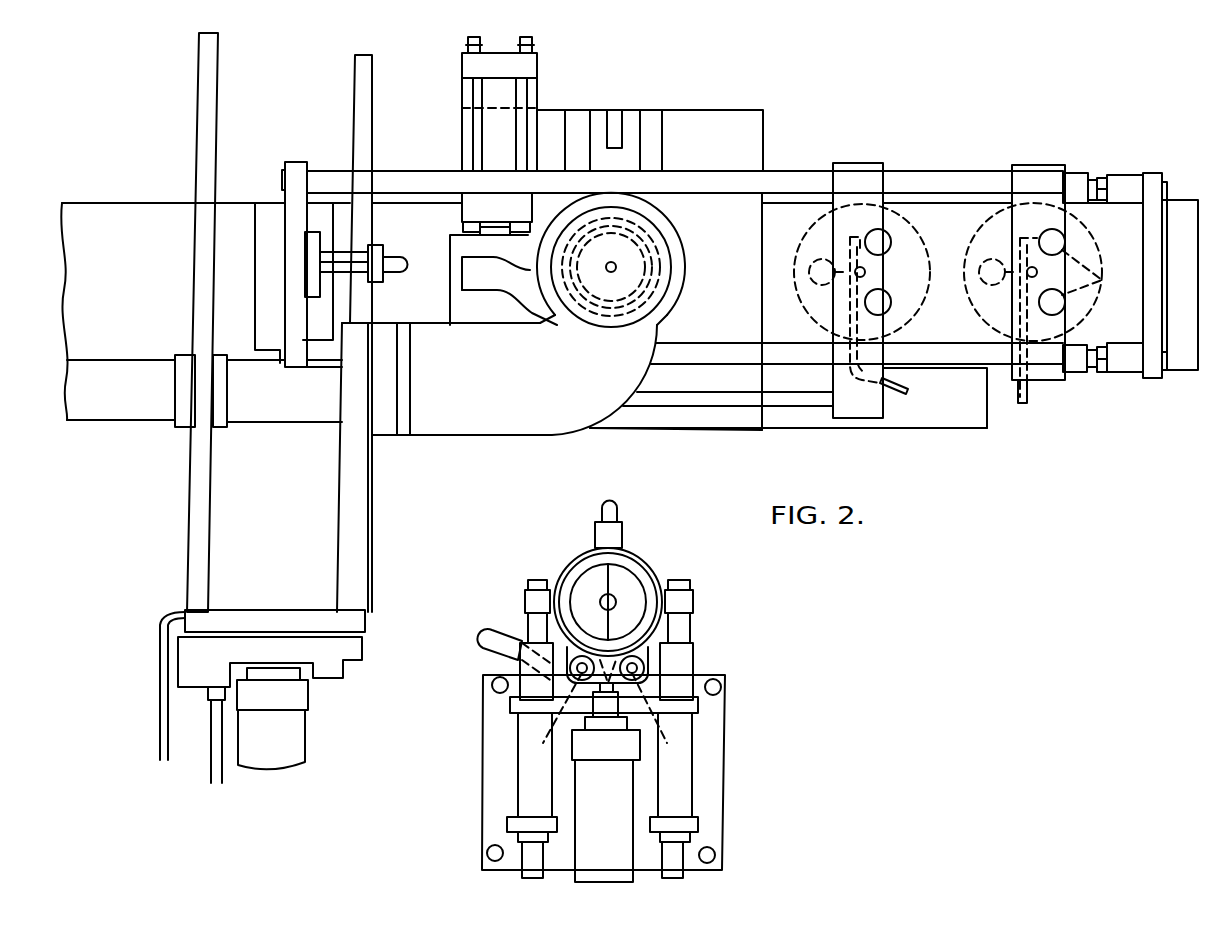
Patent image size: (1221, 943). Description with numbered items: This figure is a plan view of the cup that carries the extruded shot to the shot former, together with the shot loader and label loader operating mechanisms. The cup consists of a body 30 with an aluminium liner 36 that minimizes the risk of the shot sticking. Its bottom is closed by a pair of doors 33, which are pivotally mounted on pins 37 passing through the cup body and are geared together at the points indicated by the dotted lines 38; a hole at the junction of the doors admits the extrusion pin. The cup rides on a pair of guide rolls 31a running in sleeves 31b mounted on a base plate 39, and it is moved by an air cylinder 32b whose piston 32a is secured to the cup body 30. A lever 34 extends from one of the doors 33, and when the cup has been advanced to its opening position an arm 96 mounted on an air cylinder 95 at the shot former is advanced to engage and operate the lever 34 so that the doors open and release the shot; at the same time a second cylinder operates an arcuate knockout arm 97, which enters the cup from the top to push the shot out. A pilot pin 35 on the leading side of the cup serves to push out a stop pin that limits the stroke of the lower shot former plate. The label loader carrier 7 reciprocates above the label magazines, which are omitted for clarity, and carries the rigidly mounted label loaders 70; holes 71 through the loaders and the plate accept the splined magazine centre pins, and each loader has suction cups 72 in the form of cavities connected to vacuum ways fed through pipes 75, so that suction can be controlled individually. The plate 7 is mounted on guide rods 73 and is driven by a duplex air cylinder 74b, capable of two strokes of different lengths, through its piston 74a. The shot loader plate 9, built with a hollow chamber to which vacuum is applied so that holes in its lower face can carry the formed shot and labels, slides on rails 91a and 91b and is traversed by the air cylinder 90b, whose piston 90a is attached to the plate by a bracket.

The label loader carrier 7 is at (1032, 172).
The shot loader plate 9 is at (573, 422).
The cup body 30 is at (582, 548).
The guide rolls 31a is at (683, 630).
The sleeves 31b is at (687, 663).
The piston 32a is at (607, 697).
The air cylinder 32b is at (606, 806).
The doors 33 is at (618, 577).
The lever 34 is at (488, 640).
The pilot pin 35 is at (617, 507).
The liner 36 is at (647, 577).
The pins 37 is at (637, 672).
The gearing points 38 is at (602, 775).
The base plate 39 is at (717, 737).
The label loaders 70 is at (1080, 236).
The holes 71 is at (1029, 269).
The suction cups 72 is at (1102, 280).
The guide rods 73 is at (780, 353).
The piston 74a is at (772, 400).
The air cylinder 74b is at (303, 417).
The pipes 75 is at (1017, 402).
The piston 90a is at (273, 667).
The air cylinder 90b is at (293, 757).
The rail 91a is at (363, 82).
The rail 91b is at (215, 83).
The air cylinder 95 is at (505, 93).
The arm 96 is at (480, 263).
The arcuate knockout arm 97 is at (613, 120).